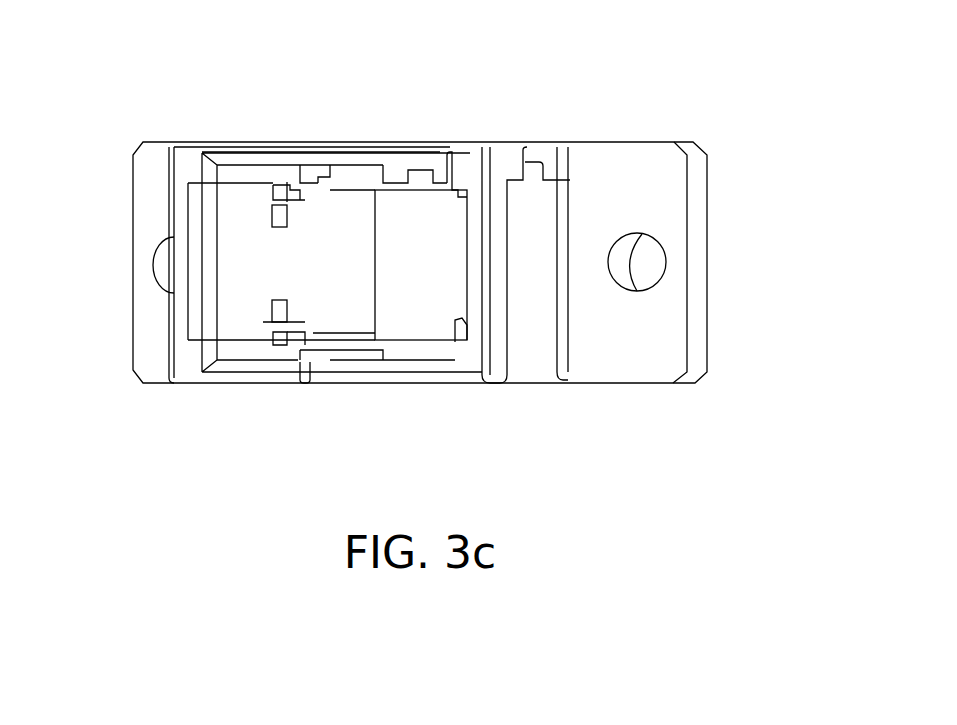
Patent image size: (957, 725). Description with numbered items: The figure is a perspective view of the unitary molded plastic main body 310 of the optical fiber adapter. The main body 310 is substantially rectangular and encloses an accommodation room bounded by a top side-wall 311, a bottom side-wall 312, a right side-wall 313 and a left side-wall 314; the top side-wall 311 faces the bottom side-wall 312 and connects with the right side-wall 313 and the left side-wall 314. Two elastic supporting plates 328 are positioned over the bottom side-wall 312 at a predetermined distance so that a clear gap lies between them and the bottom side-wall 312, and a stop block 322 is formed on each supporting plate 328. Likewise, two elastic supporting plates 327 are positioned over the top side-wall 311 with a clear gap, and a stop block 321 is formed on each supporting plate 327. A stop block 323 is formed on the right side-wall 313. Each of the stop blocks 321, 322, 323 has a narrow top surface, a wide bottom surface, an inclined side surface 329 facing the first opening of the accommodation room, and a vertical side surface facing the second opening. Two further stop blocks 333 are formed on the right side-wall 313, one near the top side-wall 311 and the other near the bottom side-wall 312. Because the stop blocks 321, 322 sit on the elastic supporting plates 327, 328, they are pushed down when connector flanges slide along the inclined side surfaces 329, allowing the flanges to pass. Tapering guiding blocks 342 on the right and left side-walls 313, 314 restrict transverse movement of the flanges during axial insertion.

The main body 310 is at (563, 100).
The top side-wall 311 is at (290, 360).
The bottom side-wall 312 is at (373, 165).
The right side-wall 313 is at (178, 338).
The left side-wall 314 is at (470, 318).
The stop block 321 is at (333, 330).
The stop block 322 is at (336, 188).
The stop block 323 is at (275, 218).
The elastic supporting plate 327 is at (312, 345).
The elastic supporting plate 328 is at (315, 150).
The inclined side surface 329 is at (360, 188).
The stop block 333 is at (277, 197).
The guiding block 342 is at (280, 190).